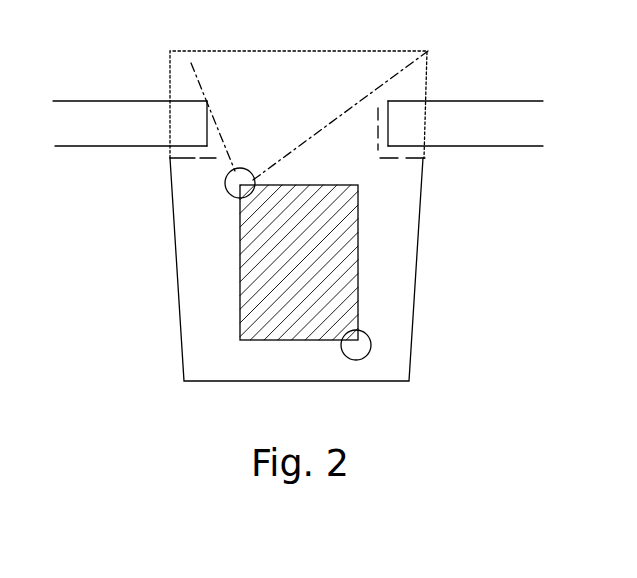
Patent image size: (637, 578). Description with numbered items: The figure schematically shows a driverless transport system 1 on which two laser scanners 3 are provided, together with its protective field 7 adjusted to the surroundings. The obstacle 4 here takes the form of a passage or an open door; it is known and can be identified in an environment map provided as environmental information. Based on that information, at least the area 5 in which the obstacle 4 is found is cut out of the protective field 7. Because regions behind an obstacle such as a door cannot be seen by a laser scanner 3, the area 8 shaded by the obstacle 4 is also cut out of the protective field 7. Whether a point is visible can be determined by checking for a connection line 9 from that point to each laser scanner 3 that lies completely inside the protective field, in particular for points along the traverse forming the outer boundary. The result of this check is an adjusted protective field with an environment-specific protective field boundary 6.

The driverless transport system 1 is at (340, 255).
The laser scanner 3 is at (223, 180).
The obstacle 4 is at (78, 130).
The area 5 is at (181, 125).
The environment-specific protective field boundary 6 is at (207, 112).
The protective field 7 is at (173, 283).
The area shaded by the obstacle 8 is at (184, 69).
The connection line 9 is at (304, 142).